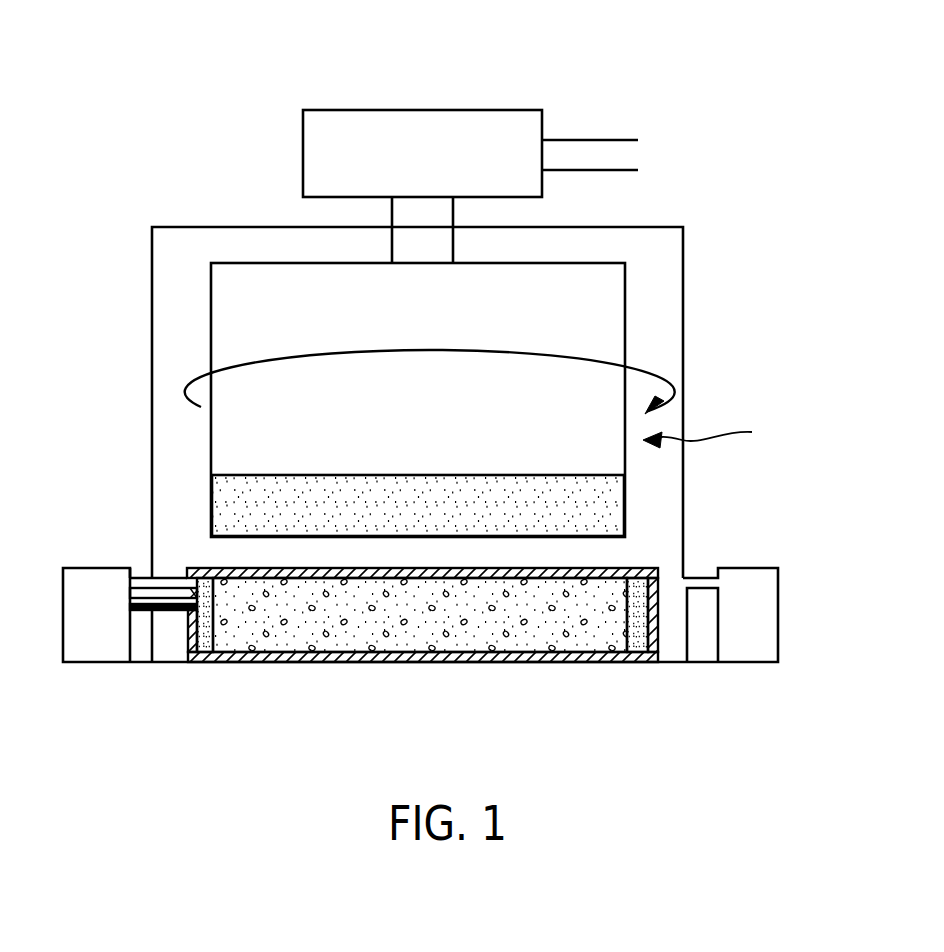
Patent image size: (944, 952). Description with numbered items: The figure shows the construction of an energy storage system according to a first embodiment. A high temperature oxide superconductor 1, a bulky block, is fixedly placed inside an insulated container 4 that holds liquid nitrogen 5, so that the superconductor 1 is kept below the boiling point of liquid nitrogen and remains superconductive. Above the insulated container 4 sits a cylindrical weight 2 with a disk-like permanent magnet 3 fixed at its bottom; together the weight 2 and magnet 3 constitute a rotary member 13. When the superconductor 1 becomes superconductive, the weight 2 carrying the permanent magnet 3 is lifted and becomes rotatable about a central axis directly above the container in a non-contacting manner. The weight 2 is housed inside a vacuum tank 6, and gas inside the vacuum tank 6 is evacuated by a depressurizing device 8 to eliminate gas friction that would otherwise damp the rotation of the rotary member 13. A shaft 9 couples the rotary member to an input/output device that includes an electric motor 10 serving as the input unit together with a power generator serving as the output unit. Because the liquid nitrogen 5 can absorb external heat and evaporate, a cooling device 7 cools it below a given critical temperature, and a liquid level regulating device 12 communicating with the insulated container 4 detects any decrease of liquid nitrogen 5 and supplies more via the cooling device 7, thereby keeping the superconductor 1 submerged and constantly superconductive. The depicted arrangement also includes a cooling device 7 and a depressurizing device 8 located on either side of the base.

The high temperature oxide superconductor 1 is at (283, 648).
The cylindrical weight 2 is at (615, 327).
The disk-like permanent magnet 3 is at (615, 502).
The insulated container 4 is at (659, 568).
The liquid nitrogen 5 is at (640, 646).
The vacuum tank 6 is at (152, 392).
The cooling device 7 is at (115, 650).
The depressurizing device 8 is at (762, 627).
The shaft 9 is at (443, 215).
The electric motor 10 is at (503, 118).
The liquid level regulating device 12 is at (143, 578).
The rotary member 13 is at (713, 433).